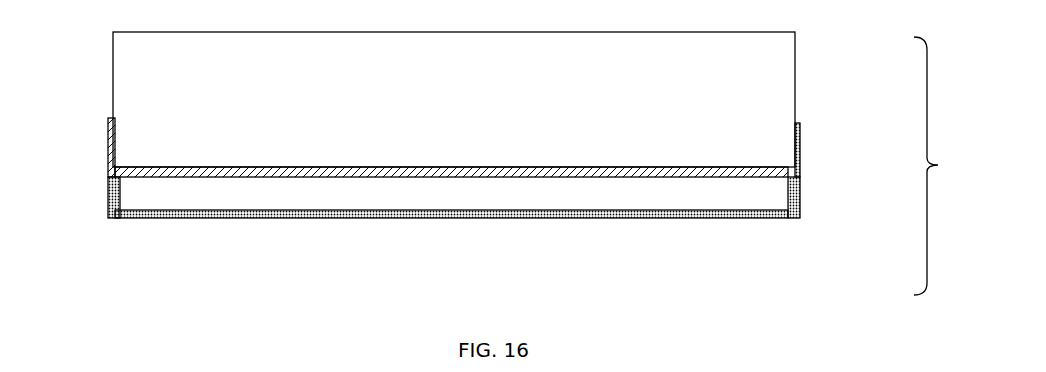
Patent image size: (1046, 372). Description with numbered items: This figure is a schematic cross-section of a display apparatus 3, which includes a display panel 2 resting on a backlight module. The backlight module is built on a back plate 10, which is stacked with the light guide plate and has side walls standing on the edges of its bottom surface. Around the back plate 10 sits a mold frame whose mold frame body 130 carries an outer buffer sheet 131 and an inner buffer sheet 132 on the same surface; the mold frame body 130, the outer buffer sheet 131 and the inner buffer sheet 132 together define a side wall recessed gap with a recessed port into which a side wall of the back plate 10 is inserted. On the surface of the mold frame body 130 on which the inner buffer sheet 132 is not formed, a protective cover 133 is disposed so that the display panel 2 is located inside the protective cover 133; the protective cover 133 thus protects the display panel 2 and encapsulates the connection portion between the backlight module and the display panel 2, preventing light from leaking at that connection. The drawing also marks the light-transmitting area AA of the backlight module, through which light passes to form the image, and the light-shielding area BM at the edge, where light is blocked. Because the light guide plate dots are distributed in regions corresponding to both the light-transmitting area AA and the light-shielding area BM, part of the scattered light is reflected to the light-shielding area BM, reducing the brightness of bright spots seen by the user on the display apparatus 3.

The display panel 2 is at (782, 88).
The display apparatus 3 is at (539, 166).
The back plate 10 is at (612, 218).
The mold frame body 130 is at (800, 194).
The outer buffer sheet 131 is at (800, 182).
The inner buffer sheet 132 is at (800, 203).
The protective cover 133 is at (800, 143).
The light-transmitting area AA is at (156, 201).
The light-shielding area BM is at (108, 199).